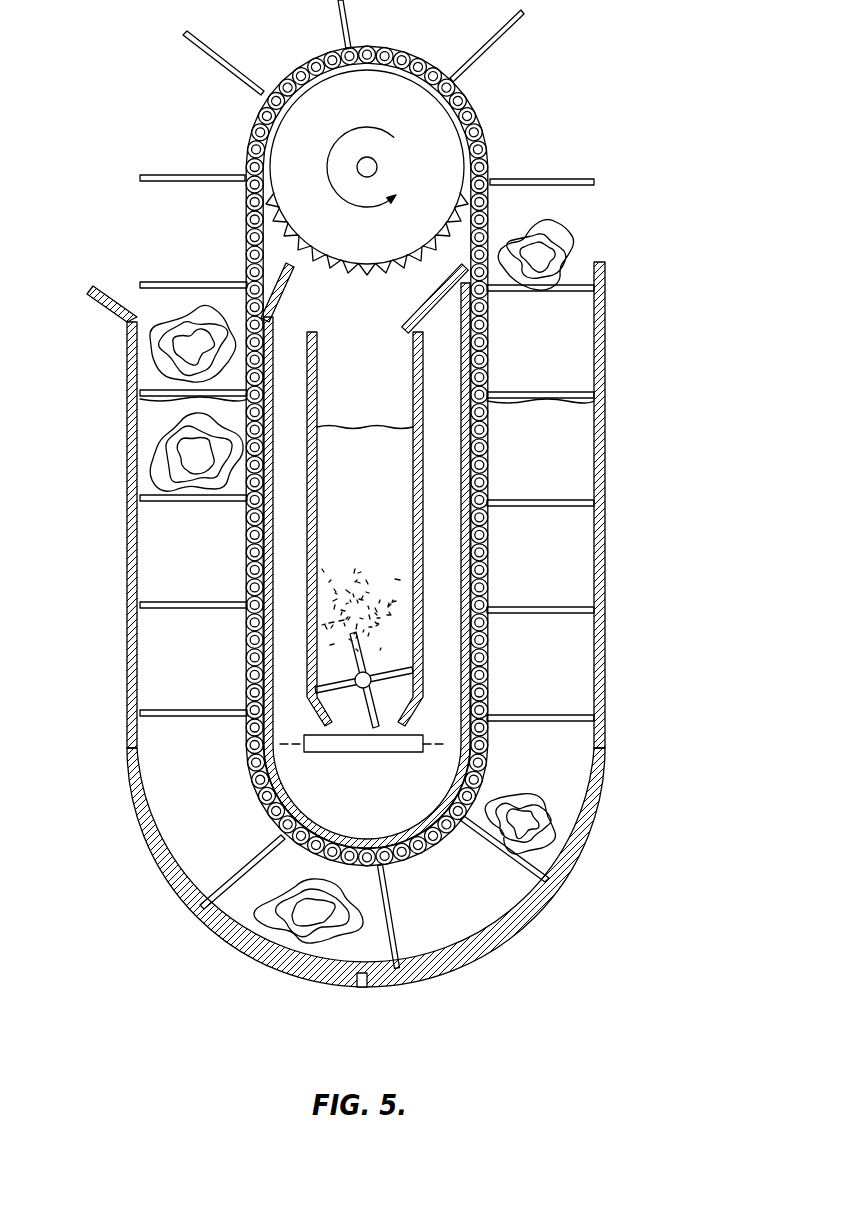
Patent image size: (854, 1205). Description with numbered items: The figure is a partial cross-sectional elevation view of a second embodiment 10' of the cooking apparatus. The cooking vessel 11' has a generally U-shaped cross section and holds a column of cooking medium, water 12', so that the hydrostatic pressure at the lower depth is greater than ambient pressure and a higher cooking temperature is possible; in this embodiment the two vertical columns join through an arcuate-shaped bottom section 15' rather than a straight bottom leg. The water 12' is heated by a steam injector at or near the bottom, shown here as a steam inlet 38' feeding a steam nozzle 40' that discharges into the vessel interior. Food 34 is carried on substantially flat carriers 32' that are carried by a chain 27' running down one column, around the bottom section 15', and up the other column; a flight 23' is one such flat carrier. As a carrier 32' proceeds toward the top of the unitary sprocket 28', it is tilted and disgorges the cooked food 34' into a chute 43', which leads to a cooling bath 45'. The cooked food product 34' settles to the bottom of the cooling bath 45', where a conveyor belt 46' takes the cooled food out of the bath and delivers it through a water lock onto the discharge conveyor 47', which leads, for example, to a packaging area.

The second embodiment of the apparatus 10' is at (372, 516).
The cooking vessel 11' is at (330, 509).
The water 12' is at (317, 454).
The arcuate-shaped bottom section 15' is at (366, 867).
The flight shelf 23' is at (308, 392).
The chain 27' is at (453, 456).
The unitary sprocket 28' is at (411, 172).
The flat carrier 32' is at (396, 501).
The food 34 is at (302, 630).
The cooked food product 34' is at (569, 251).
The steam inlet 38' is at (332, 1002).
The steam nozzle 40' is at (404, 920).
The chute 43' is at (365, 555).
The cooling bath 45' is at (365, 529).
The conveyor belt 46' is at (422, 680).
The discharge conveyor 47' is at (363, 776).